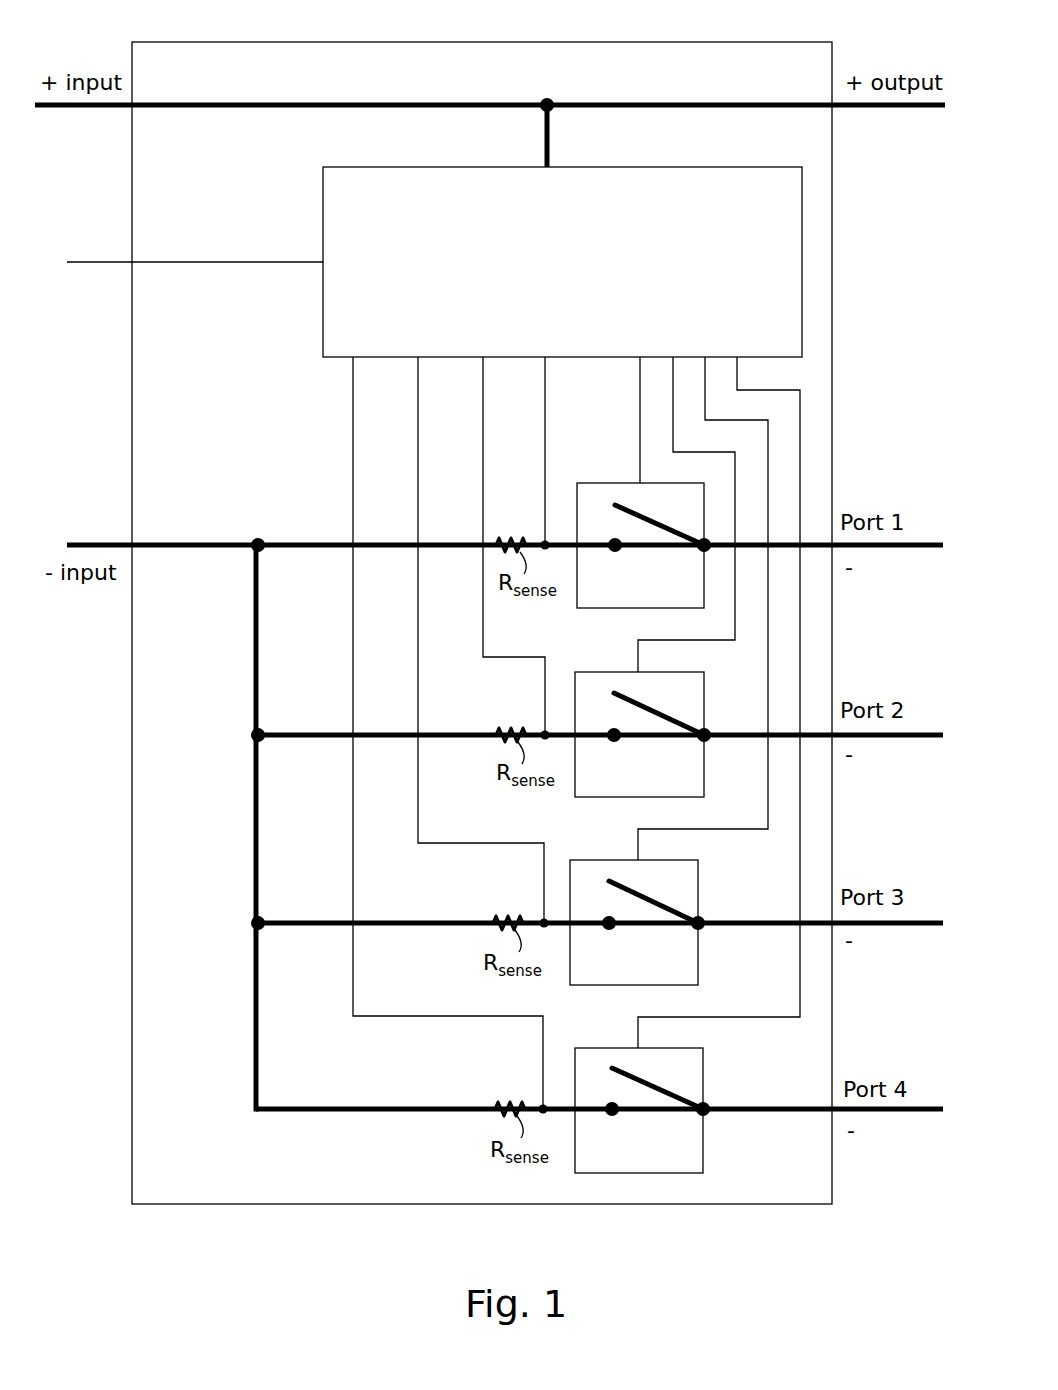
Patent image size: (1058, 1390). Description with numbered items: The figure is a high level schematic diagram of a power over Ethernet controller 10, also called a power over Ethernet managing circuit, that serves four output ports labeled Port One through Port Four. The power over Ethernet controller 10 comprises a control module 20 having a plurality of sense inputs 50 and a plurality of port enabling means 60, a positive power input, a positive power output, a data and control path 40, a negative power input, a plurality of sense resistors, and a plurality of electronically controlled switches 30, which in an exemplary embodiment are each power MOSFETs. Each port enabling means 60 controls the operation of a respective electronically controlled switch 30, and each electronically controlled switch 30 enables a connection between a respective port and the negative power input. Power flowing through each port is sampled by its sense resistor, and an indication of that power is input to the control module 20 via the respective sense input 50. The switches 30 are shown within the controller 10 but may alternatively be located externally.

The power over Ethernet controller 10 is at (580, 42).
The control module 20 is at (323, 230).
The electronically controlled switch 30 is at (627, 483).
The data and control path 40 is at (115, 262).
The sense input 50 is at (353, 405).
The port enabling means 60 is at (640, 372).